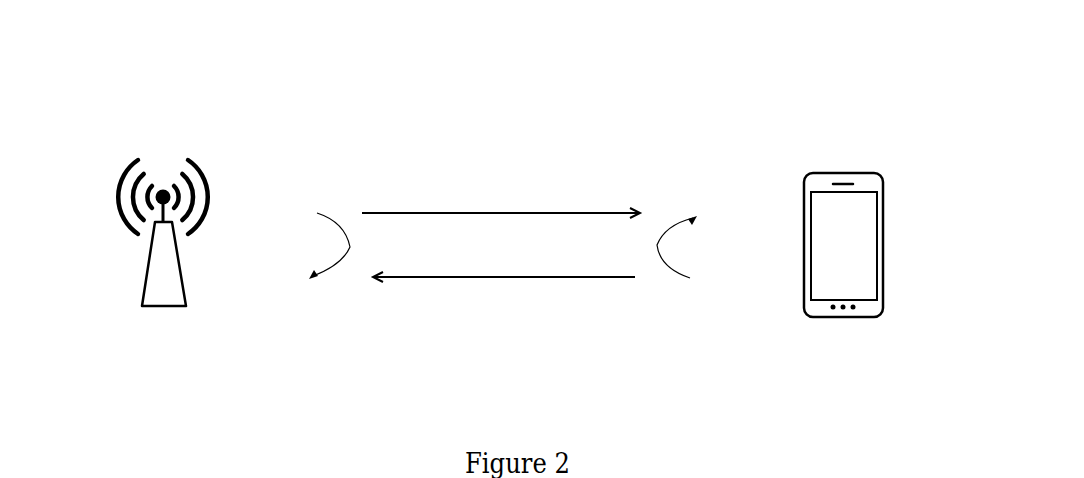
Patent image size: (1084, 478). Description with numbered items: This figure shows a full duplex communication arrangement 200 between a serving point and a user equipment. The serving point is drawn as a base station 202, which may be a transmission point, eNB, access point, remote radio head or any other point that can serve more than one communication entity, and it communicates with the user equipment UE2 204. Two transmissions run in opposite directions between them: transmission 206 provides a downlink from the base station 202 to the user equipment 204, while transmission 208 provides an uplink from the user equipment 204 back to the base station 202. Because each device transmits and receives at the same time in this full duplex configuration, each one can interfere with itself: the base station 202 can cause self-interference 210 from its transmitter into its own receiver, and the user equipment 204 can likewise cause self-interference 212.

The wireless communication system 200 is at (744, 59).
The base station 202 is at (148, 266).
The user equipment 204 is at (884, 238).
The transmission 206 is at (452, 213).
The transmission 208 is at (452, 277).
The self-interference 210 is at (353, 248).
The self-interference 212 is at (655, 247).